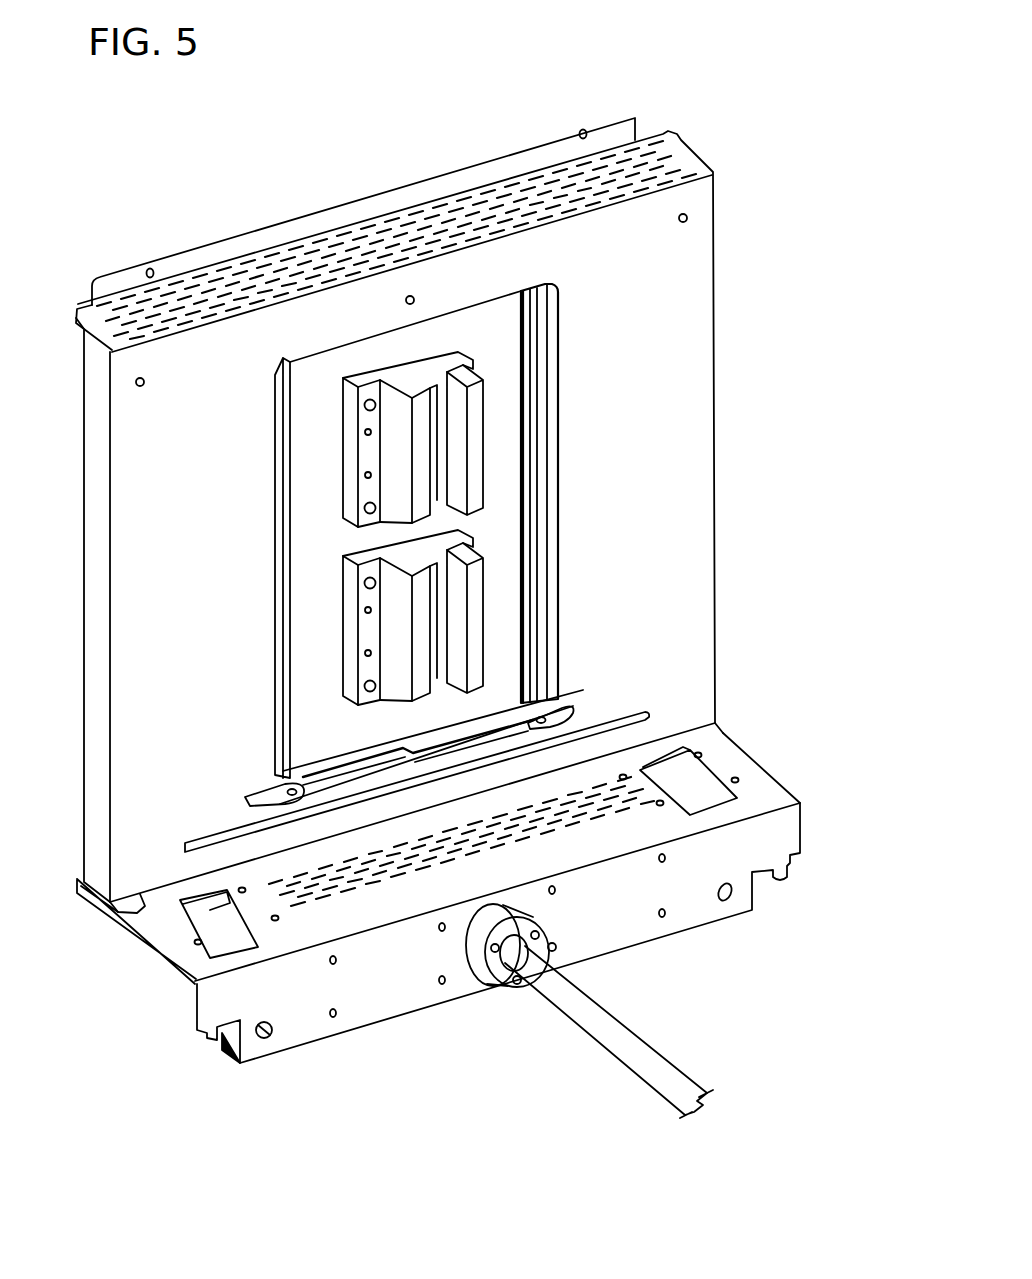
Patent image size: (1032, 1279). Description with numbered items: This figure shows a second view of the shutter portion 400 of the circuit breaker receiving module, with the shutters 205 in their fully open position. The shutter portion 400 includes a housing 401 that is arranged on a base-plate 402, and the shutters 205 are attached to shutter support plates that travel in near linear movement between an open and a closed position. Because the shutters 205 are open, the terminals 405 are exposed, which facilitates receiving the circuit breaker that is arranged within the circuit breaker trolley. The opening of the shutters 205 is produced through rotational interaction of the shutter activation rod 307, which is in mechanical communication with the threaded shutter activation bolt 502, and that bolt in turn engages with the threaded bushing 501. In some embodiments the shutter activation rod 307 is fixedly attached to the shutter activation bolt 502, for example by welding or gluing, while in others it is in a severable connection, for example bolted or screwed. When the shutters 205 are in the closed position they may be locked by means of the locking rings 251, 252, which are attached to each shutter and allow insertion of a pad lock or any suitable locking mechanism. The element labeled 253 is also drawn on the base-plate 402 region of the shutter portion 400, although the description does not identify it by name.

The shutter portion 400 is at (585, 80).
The housing 401 is at (652, 304).
The base-plate 402 is at (605, 860).
The shutters 205 is at (537, 443).
The terminals 405 is at (400, 617).
The locking ring 251 is at (272, 792).
The locking ring 252 is at (562, 712).
The base flange 253 is at (185, 890).
The threaded bushing 501 is at (513, 912).
The threaded shutter activation bolt 502 is at (518, 944).
The shutter activation rod 307 is at (660, 1060).